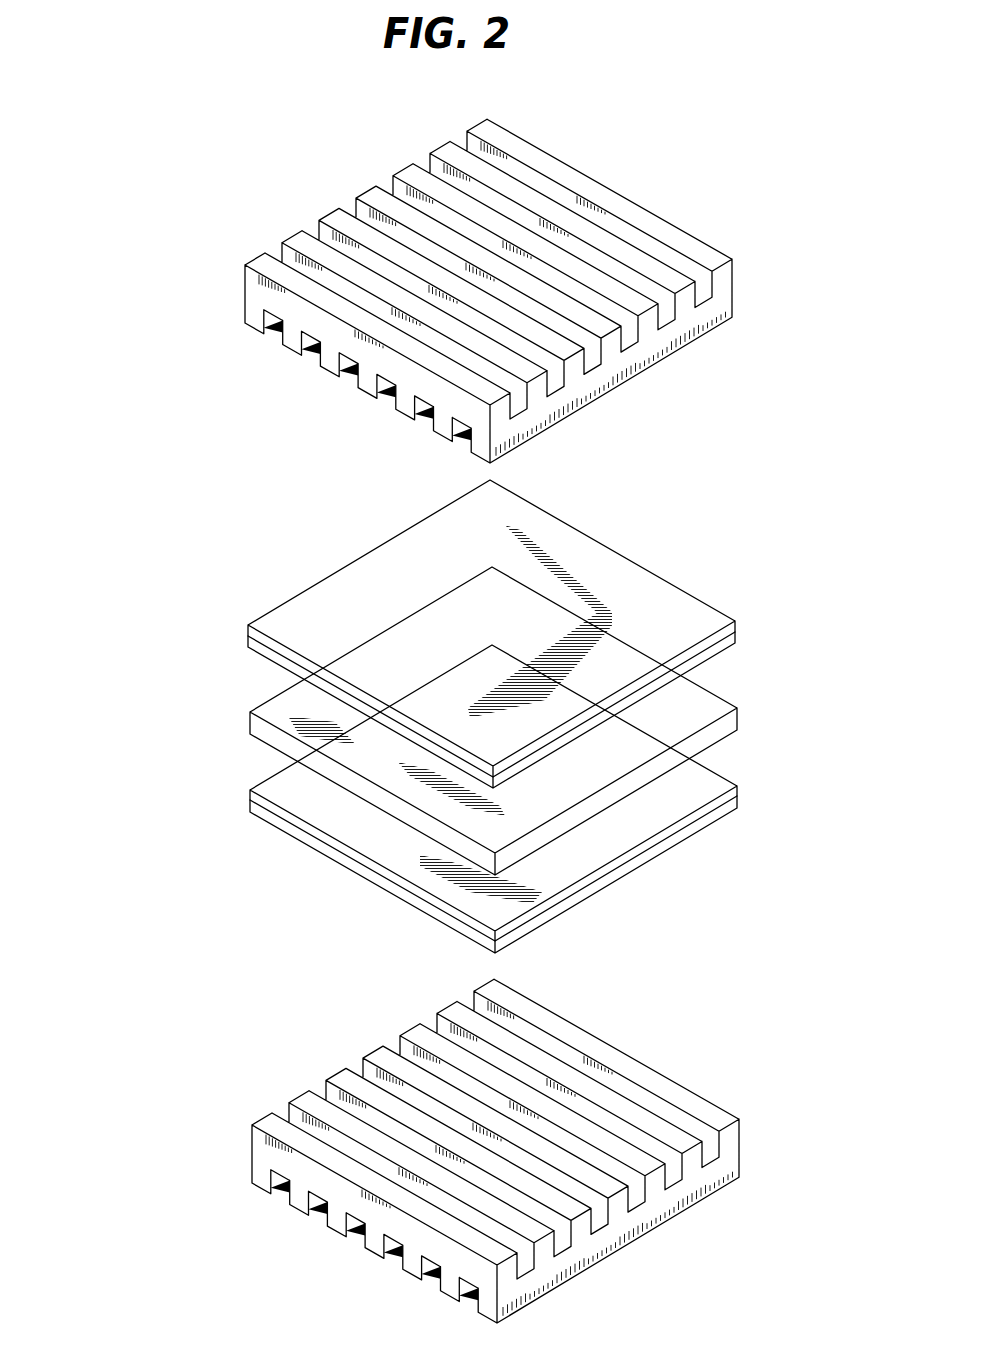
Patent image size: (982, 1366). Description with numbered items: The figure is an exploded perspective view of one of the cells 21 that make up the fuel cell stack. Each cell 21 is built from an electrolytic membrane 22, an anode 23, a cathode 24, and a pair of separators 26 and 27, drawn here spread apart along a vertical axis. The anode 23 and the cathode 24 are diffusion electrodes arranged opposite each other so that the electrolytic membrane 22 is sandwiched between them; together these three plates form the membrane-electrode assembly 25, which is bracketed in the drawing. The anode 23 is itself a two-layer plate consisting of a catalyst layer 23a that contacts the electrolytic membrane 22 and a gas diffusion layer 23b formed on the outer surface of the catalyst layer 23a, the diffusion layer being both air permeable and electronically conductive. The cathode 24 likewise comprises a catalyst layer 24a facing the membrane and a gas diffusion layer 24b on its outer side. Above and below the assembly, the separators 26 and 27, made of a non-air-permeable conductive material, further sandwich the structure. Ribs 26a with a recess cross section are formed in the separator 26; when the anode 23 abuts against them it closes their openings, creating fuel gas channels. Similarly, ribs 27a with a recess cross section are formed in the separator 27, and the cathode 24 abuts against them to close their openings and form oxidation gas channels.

The cell 21 is at (101, 219).
The electrolytic membrane 22 is at (250, 722).
The anode 23 is at (159, 602).
The catalyst layer 23a is at (248, 645).
The gas diffusion layer 23b is at (248, 632).
The cathode 24 is at (161, 775).
The catalyst layer 24a is at (250, 797).
The gas diffusion layer 24b is at (250, 808).
The membrane-electrode assembly 25 is at (117, 618).
The separator 26 is at (244, 295).
The ribs 26a is at (367, 381).
The separator 27 is at (742, 1163).
The ribs 27a is at (516, 1171).